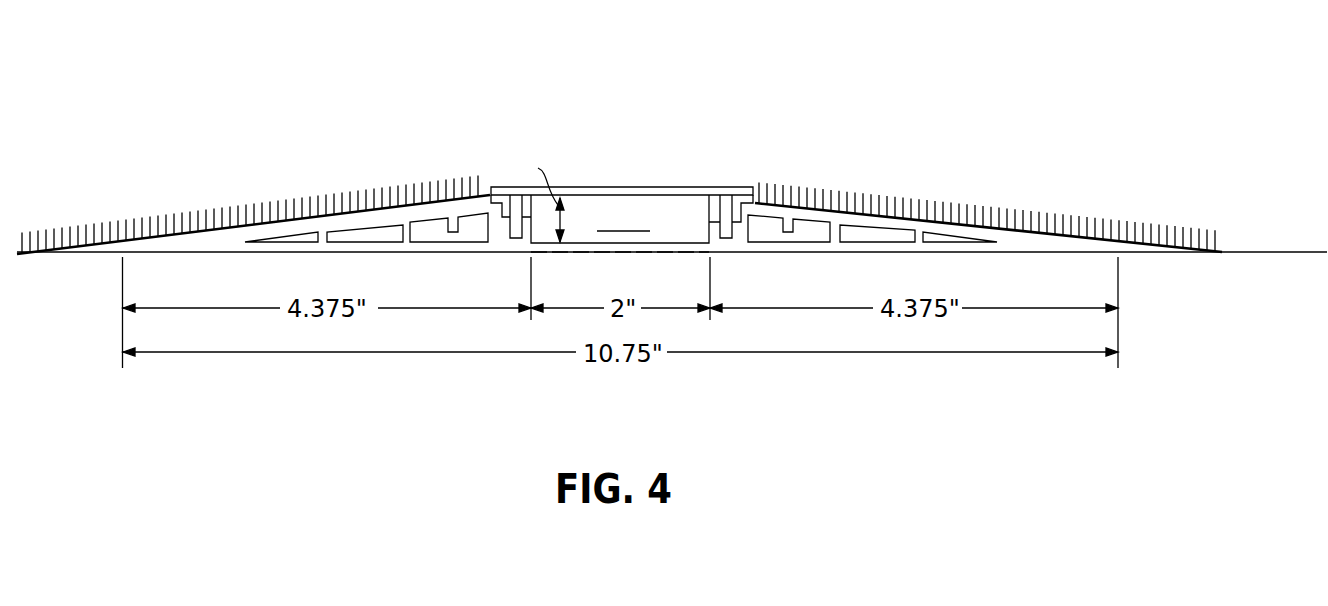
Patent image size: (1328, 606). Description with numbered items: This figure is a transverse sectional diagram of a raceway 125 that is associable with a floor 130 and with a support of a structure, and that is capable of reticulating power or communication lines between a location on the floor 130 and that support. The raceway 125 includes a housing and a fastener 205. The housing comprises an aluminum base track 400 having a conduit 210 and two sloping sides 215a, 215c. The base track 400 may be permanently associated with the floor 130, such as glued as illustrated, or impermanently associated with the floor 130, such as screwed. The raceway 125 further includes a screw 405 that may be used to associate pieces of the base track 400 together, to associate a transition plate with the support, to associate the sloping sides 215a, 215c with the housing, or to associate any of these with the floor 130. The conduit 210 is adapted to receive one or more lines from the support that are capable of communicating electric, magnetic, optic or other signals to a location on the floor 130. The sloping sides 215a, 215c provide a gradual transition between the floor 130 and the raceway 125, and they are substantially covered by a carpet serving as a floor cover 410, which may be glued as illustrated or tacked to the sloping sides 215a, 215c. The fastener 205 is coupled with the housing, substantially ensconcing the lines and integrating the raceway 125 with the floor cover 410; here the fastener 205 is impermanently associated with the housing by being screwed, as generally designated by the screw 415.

The raceway 125 is at (462, 93).
The floor 130 is at (1298, 252).
The fastener 205 is at (621, 187).
The conduit 210 is at (614, 192).
The sloping side 215a is at (360, 233).
The sloping side 215c is at (865, 237).
The base track 400 is at (653, 252).
The screw 405 is at (477, 223).
The floor cover 410 is at (817, 171).
The screw 415 is at (727, 189).